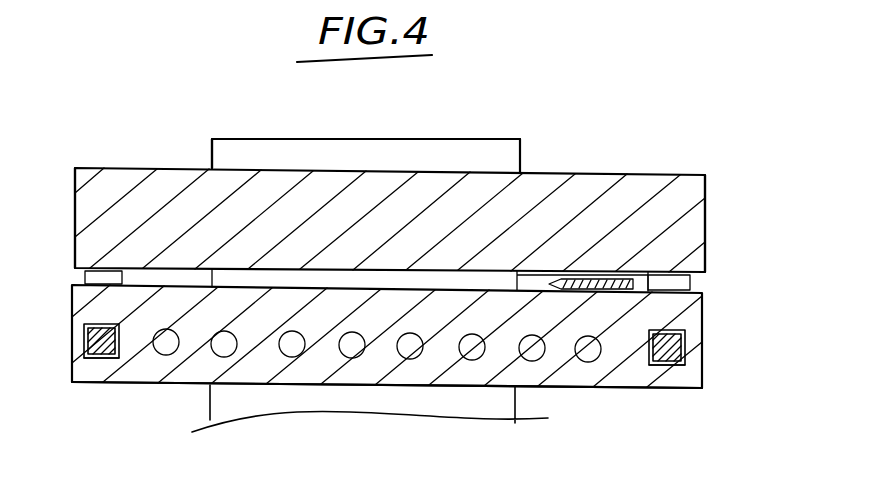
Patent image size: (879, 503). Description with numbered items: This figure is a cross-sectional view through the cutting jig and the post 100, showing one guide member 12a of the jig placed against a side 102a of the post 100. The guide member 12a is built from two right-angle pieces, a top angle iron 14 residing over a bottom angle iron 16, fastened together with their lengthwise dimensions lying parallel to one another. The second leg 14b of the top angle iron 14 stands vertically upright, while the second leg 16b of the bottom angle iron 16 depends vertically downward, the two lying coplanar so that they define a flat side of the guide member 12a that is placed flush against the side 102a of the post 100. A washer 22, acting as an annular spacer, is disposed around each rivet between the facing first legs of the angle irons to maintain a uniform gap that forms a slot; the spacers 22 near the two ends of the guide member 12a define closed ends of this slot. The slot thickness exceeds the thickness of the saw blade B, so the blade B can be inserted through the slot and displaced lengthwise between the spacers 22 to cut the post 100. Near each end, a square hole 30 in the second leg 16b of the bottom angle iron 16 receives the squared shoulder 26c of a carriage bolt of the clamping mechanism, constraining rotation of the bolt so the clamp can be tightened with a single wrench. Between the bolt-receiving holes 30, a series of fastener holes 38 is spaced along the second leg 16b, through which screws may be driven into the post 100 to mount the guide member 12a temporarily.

The guide member 12a is at (78, 155).
The post 100 is at (216, 126).
The side of the post 102a is at (406, 152).
The blade B is at (595, 277).
The top angle iron 14 is at (660, 186).
The second leg of the top angle iron 14b is at (690, 199).
The washer 22 is at (77, 282).
The square hole 30 is at (120, 340).
The squared shoulder 26c is at (108, 358).
The bottom angle iron 16 is at (613, 375).
The second leg of the bottom angle iron 16b is at (568, 380).
The fastener holes 38 is at (280, 358).